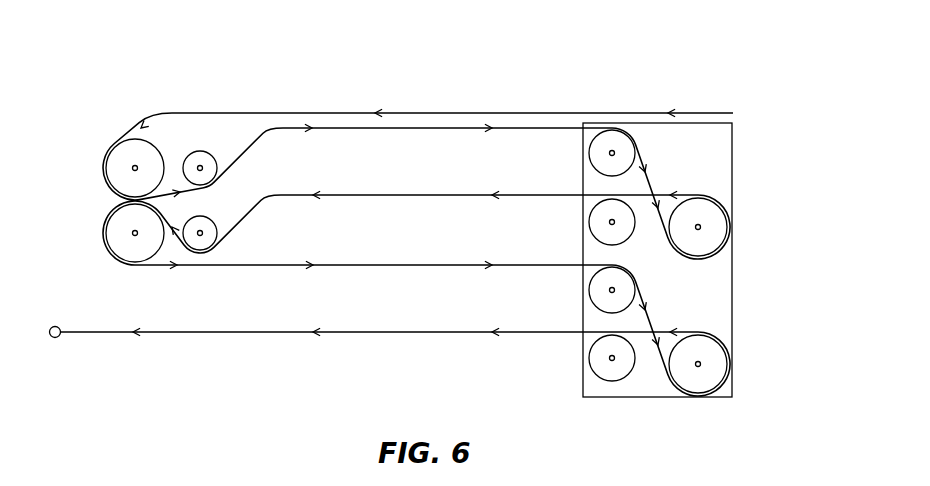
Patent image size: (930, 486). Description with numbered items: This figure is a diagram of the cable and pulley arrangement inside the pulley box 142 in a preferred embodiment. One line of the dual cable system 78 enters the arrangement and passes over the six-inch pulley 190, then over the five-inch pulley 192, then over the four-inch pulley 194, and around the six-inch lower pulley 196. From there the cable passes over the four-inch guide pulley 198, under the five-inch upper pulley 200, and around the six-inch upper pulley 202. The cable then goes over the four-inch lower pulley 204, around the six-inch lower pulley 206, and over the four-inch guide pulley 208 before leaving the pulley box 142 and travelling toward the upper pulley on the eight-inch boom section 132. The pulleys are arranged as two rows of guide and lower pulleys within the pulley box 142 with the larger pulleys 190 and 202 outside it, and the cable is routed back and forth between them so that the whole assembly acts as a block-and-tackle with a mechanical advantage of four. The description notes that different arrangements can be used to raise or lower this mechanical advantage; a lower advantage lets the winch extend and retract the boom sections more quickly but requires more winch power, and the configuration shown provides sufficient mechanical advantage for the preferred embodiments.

The dual cable system 78 is at (420, 113).
The boom section 132 is at (55, 338).
The pulley box 142 is at (732, 163).
The pulley 190 is at (105, 168).
The pulley 192 is at (201, 151).
The pulley 194 is at (589, 153).
The lower pulley 196 is at (720, 206).
The guide pulley 198 is at (589, 222).
The upper pulley 200 is at (201, 216).
The upper pulley 202 is at (105, 233).
The lower pulley 204 is at (589, 290).
The lower pulley 206 is at (720, 343).
The guide pulley 208 is at (589, 358).